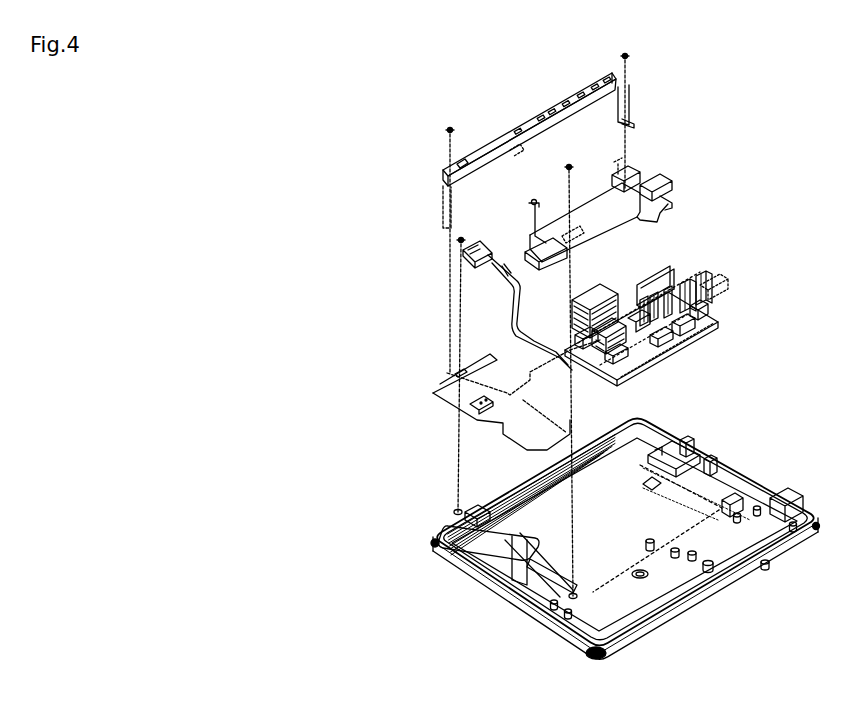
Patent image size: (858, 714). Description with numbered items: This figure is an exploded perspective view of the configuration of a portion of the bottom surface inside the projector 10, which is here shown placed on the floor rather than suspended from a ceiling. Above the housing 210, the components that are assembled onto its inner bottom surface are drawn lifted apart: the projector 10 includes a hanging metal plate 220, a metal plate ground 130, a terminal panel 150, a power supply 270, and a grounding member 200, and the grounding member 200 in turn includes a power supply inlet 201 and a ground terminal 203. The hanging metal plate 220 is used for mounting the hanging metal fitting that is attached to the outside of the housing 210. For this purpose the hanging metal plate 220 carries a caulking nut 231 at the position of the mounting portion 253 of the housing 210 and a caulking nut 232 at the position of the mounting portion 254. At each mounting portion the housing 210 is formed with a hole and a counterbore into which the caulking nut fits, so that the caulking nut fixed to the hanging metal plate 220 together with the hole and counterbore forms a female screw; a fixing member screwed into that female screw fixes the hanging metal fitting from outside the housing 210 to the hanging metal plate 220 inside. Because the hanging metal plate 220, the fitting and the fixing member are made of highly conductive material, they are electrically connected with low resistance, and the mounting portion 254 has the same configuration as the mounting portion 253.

The projector 10 is at (758, 394).
The metal plate ground 130 is at (433, 394).
The terminal panel 150 is at (498, 150).
The grounding member 200 is at (370, 275).
The power supply inlet 201 is at (462, 251).
The ground terminal 203 is at (463, 262).
The housing 210 is at (752, 476).
The hanging metal plate 220 is at (600, 207).
The caulking nut 231 is at (553, 266).
The caulking nut 232 is at (668, 196).
The mounting portion 253 is at (467, 512).
The mounting portion 254 is at (665, 450).
The power supply 270 is at (709, 284).